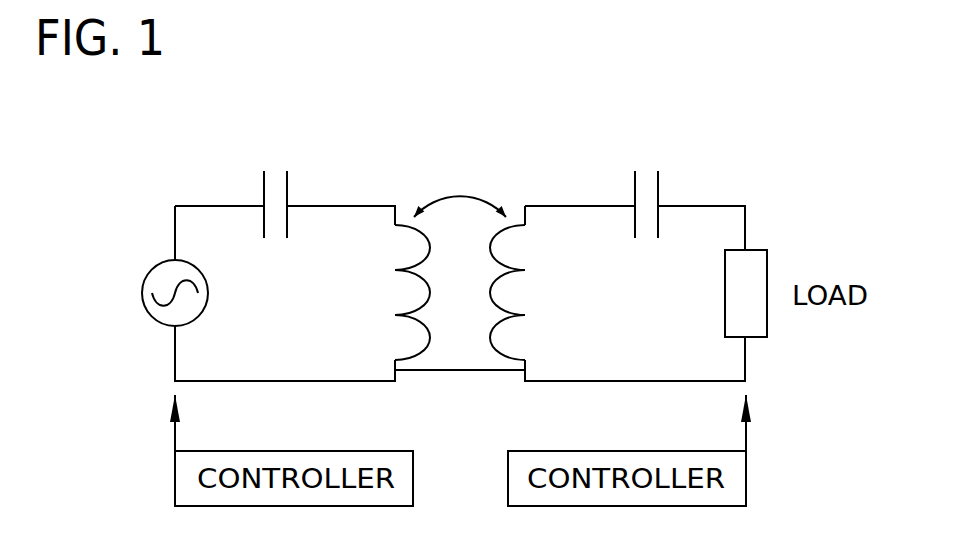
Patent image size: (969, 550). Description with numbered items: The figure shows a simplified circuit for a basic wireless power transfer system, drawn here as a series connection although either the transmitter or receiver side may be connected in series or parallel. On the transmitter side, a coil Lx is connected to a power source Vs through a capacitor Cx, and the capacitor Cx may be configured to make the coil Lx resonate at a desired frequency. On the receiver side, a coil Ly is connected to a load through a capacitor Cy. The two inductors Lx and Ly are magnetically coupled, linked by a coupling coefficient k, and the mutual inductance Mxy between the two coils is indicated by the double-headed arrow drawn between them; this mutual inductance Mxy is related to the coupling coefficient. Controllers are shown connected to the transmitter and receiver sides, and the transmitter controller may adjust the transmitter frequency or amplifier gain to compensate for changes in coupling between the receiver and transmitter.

The power source Vs is at (141, 293).
The capacitor Cx is at (274, 186).
The coil Lx is at (404, 264).
The coil Ly is at (518, 265).
The mutual inductance Mxy is at (460, 188).
The capacitor Cy is at (644, 187).